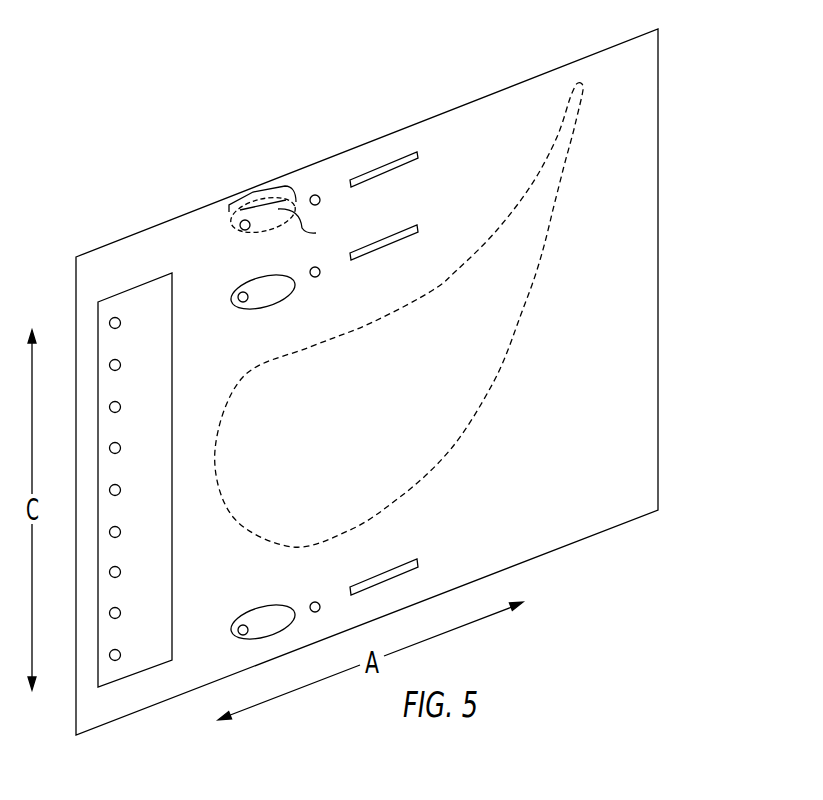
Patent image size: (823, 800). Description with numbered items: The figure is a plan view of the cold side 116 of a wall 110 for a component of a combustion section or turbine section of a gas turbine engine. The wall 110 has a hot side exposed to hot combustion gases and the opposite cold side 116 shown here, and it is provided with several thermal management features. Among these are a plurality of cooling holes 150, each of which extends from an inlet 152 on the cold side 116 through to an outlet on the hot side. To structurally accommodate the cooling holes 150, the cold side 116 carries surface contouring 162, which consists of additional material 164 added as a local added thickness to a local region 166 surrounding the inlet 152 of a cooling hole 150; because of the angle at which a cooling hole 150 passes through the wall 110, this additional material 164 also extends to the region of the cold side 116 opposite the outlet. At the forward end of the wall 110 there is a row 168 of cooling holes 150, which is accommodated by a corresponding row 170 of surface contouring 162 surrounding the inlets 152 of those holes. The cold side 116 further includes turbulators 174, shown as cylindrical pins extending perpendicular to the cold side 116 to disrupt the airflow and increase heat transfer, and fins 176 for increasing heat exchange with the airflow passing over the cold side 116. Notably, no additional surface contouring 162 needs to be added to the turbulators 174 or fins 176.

The wall 110 is at (772, 29).
The cold side 116 is at (608, 235).
The cooling hole 150 is at (259, 222).
The inlet 152 is at (237, 232).
The surface contouring 162 is at (297, 198).
The additional material 164 is at (312, 229).
The local region 166 is at (253, 196).
The row of cooling holes 168 is at (108, 313).
The row of surface contouring 170 is at (138, 283).
The turbulators 174 is at (316, 195).
The fins 176 is at (396, 160).